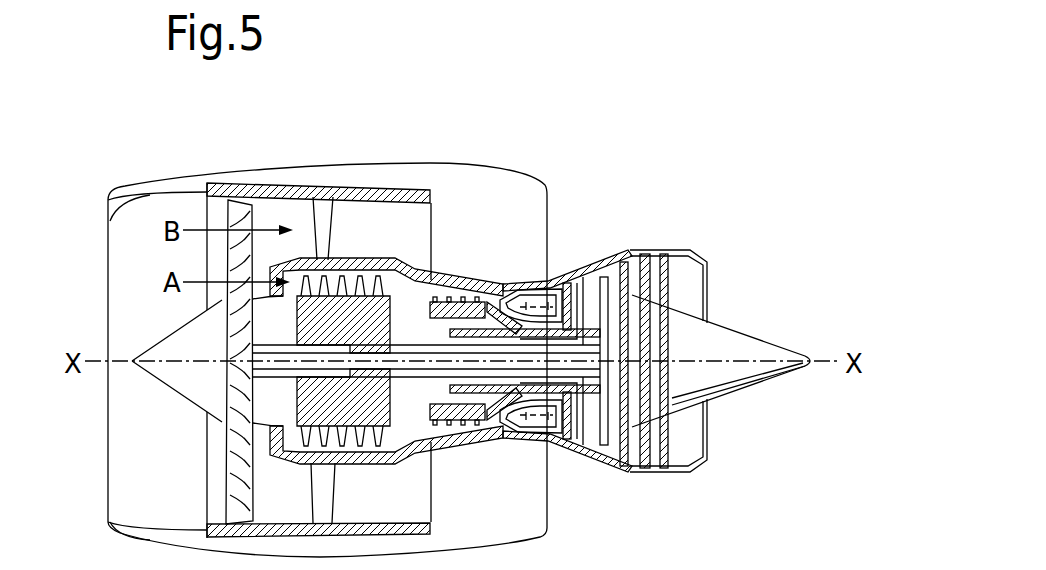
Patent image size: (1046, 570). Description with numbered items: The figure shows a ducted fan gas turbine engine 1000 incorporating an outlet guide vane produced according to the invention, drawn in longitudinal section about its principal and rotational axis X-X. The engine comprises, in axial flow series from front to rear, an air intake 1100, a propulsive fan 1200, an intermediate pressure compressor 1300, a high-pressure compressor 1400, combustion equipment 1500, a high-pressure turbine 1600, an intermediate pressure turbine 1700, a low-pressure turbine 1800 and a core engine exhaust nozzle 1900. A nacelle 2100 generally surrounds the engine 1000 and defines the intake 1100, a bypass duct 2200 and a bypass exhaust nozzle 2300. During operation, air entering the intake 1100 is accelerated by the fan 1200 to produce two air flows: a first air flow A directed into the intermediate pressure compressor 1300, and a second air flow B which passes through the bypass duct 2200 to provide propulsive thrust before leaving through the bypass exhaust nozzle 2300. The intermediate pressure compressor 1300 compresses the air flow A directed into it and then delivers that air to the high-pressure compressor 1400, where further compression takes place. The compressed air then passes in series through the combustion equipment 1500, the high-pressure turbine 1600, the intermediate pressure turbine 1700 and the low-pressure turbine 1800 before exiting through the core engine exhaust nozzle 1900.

The ducted fan gas turbine engine 1000 is at (170, 141).
The air intake 1100 is at (110, 219).
The propulsive fan 1200 is at (226, 478).
The intermediate pressure compressor 1300 is at (353, 440).
The high-pressure compressor 1400 is at (460, 298).
The combustion equipment 1500 is at (498, 430).
The high-pressure turbine 1600 is at (560, 438).
The intermediate pressure turbine 1700 is at (600, 268).
The low-pressure turbine 1800 is at (633, 465).
The core engine exhaust nozzle 1900 is at (700, 252).
The nacelle 2100 is at (291, 176).
The bypass duct 2200 is at (478, 215).
The bypass exhaust nozzle 2300 is at (548, 192).